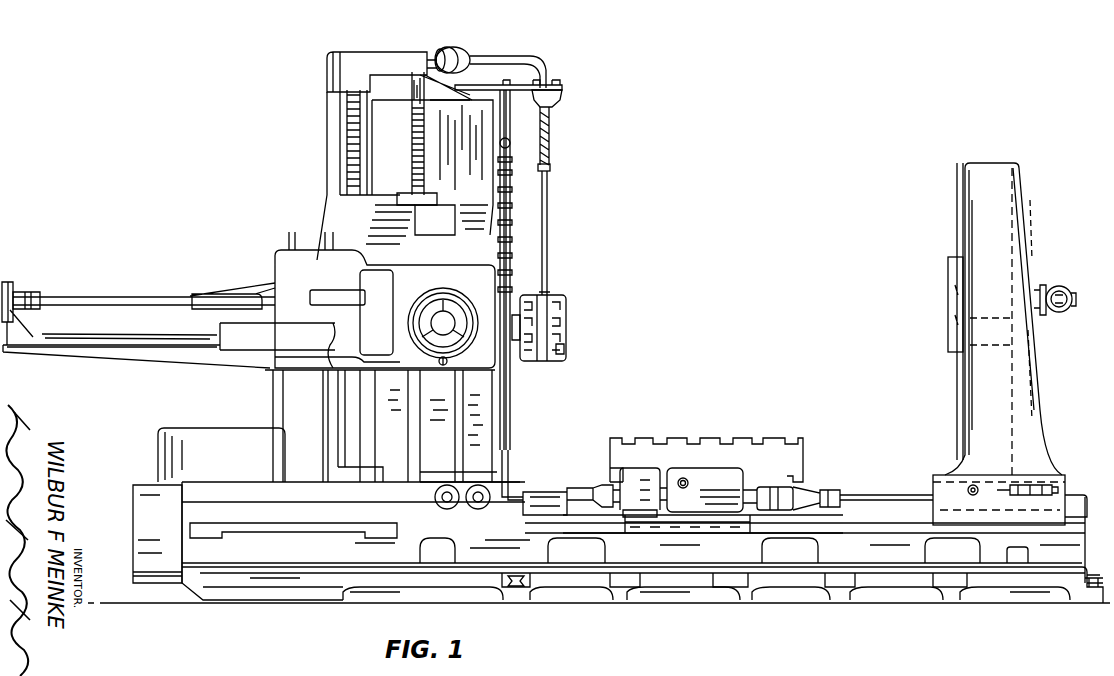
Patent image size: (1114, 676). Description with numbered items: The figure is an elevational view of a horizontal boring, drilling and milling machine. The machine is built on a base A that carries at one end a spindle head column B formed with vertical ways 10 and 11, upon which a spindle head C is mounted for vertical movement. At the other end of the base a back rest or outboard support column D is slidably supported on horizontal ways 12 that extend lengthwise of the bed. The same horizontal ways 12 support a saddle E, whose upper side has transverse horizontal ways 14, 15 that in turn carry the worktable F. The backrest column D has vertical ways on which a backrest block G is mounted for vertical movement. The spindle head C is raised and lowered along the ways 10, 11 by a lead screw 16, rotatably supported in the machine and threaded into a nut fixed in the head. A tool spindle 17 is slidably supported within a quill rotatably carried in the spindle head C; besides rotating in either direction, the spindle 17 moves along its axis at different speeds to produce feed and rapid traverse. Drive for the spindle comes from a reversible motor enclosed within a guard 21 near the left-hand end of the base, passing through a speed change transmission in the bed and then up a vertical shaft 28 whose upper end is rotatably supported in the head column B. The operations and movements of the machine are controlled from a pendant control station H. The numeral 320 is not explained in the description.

The base A is at (1072, 554).
The spindle head column B is at (398, 58).
The spindle head C is at (278, 262).
The back rest or outboard support column D is at (1018, 376).
The saddle E is at (675, 512).
The worktable F is at (714, 440).
The backrest block G is at (950, 300).
The pendant control station H is at (565, 310).
The vertical way 10 is at (492, 467).
The vertical way 11 is at (345, 402).
The horizontal ways 12 is at (878, 496).
The transverse horizontal way 14 is at (640, 470).
The transverse horizontal way 15 is at (778, 470).
The lead screw 16 is at (410, 130).
The tool spindle 17 is at (546, 295).
The guard 21 is at (148, 510).
The vertical shaft 28 is at (358, 100).
The dial 320 is at (566, 352).